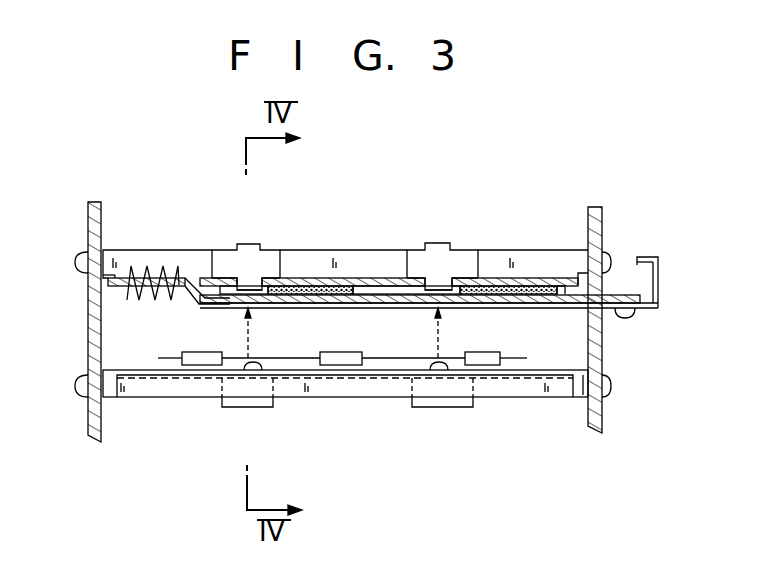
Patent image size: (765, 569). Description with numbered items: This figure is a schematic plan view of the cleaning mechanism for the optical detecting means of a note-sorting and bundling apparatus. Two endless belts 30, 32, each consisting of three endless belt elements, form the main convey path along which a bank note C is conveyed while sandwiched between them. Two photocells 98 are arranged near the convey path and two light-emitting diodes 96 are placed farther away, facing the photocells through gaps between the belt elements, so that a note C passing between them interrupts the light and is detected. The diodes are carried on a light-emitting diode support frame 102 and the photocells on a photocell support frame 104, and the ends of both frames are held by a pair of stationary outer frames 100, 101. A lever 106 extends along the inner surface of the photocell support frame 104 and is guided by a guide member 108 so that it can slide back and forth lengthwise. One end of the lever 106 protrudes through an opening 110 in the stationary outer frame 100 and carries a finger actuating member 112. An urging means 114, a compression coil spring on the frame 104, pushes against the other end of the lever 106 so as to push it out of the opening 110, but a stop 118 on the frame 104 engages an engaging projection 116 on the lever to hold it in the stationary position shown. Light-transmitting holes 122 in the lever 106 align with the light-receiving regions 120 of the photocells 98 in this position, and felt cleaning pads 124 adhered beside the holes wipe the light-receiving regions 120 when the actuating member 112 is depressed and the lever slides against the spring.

The endless belt 30 is at (192, 366).
The endless belt 32 is at (190, 352).
The light-emitting diode 96 is at (240, 407).
The photocell 98 is at (244, 250).
The stationary outer frame 100 is at (592, 214).
The stationary outer frame 101 is at (93, 358).
The light-emitting diode support frame 102 is at (550, 396).
The photocell support frame 104 is at (360, 260).
The lever 106 is at (558, 308).
The guide member 108 is at (354, 304).
The opening 110 is at (598, 329).
The finger actuating member 112 is at (662, 282).
The urging means 114 is at (144, 258).
The engaging projection 116 is at (193, 298).
The stop 118 is at (199, 276).
The light-receiving region 120 is at (254, 287).
The light-transmitting hole 122 is at (252, 302).
The cleaning pad 124 is at (344, 298).
The note C is at (385, 360).